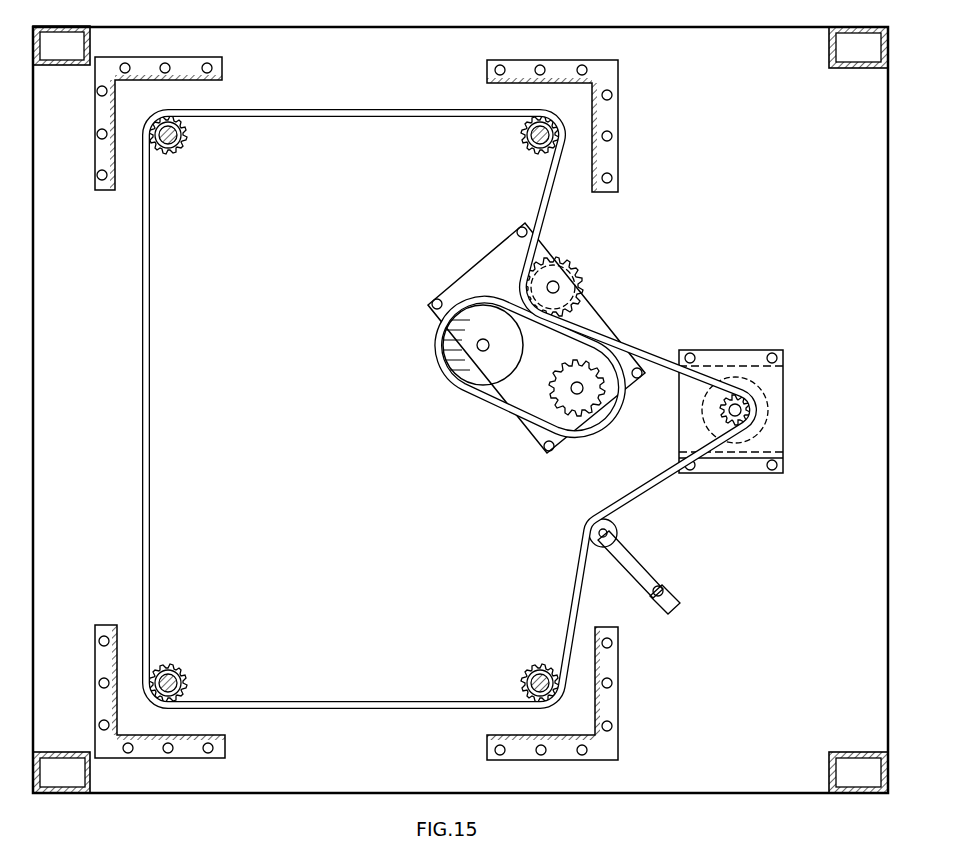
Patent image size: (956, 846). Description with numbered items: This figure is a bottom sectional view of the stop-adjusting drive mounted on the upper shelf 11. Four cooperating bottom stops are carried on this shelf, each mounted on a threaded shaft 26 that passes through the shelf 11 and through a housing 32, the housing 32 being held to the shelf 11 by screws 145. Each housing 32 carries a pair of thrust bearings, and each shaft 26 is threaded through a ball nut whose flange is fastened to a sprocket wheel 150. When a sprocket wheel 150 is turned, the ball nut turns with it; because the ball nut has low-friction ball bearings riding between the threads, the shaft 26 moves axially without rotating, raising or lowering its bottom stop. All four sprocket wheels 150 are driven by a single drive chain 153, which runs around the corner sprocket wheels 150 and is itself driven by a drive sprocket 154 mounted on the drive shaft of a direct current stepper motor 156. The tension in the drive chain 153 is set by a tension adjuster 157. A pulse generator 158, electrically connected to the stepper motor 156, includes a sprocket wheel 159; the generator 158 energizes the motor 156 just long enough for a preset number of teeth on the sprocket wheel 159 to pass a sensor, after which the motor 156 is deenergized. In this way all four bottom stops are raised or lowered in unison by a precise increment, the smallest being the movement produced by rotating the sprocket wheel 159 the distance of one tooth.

The upper shelf 11 is at (262, 380).
The threaded shaft 26 is at (177, 682).
The housing 32 is at (183, 78).
The screws 145 is at (97, 93).
The sprocket wheel 150 is at (186, 142).
The drive chain 153 is at (383, 702).
The drive sprocket 154 is at (718, 412).
The direct current stepper motor 156 is at (783, 406).
The tension adjuster 157 is at (630, 563).
The pulse generator 158 is at (421, 352).
The sprocket wheel 159 is at (566, 280).